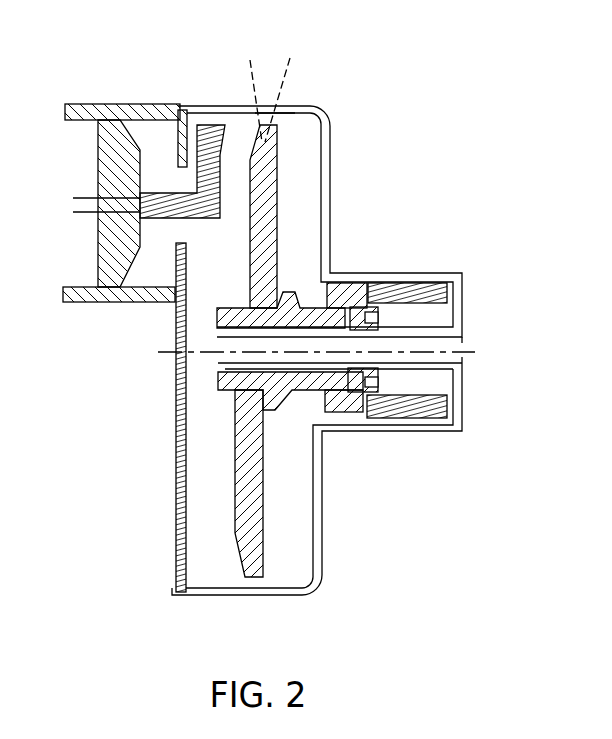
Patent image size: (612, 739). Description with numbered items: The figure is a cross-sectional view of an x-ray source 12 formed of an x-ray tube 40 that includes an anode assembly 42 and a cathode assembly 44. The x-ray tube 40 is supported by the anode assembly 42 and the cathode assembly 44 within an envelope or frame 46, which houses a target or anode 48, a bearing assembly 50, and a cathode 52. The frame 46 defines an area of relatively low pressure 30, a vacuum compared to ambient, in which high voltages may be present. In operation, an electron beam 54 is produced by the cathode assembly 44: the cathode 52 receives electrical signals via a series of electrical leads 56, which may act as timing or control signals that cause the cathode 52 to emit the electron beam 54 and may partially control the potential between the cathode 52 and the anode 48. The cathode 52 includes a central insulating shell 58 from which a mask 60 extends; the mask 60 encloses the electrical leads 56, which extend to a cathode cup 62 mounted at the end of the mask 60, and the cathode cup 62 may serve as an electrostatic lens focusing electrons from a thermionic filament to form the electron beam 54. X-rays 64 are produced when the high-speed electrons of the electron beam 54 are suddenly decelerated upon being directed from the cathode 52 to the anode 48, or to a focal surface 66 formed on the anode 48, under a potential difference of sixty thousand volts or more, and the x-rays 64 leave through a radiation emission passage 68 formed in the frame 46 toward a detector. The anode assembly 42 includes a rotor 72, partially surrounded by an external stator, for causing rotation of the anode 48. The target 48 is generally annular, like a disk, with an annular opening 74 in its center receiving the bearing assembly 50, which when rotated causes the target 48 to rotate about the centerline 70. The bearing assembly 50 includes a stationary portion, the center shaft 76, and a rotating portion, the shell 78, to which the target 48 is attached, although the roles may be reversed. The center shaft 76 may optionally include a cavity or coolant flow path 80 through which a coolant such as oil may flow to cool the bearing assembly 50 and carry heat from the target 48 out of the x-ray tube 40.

The x-ray source 12 is at (133, 377).
The area of relatively low pressure 30 is at (193, 490).
The x-ray tube 40 is at (278, 44).
The anode assembly 42 is at (341, 110).
The cathode assembly 44 is at (153, 88).
The frame 46 is at (185, 597).
The anode 48 is at (277, 185).
The bearing assembly 50 is at (394, 383).
The cathode 52 is at (192, 173).
The electron beam 54 is at (222, 140).
The electrical leads 56 is at (80, 200).
The central insulating shell 58 is at (97, 135).
The mask 60 is at (168, 232).
The cathode cup 62 is at (217, 106).
The x-rays 64 is at (291, 72).
The focal surface 66 is at (233, 556).
The radiation emission passage 68 is at (275, 104).
The centerline 70 is at (160, 351).
The rotor 72 is at (410, 282).
The annular opening 74 is at (236, 306).
The center shaft 76 is at (445, 362).
The shell 78 is at (300, 393).
The coolant flow path 80 is at (472, 348).